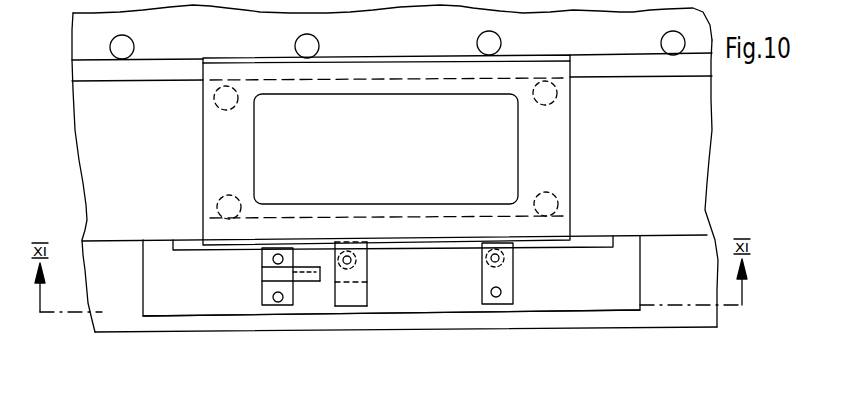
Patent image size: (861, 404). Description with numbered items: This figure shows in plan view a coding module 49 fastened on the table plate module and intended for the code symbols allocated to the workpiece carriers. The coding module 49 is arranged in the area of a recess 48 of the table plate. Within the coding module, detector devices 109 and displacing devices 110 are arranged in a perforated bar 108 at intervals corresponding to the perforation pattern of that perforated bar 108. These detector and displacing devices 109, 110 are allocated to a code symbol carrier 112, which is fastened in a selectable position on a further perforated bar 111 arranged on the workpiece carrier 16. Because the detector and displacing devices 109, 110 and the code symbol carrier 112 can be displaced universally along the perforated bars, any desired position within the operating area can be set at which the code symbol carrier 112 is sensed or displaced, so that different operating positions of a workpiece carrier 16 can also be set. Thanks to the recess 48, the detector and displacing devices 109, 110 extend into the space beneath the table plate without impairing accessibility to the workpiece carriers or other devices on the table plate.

The workpiece carrier 16 is at (561, 146).
The recess 48 is at (640, 272).
The coding module 49 is at (398, 303).
The perforated bar 108 is at (596, 246).
The detector device 109 is at (294, 308).
The displacing device 110 is at (520, 288).
The perforated bar 111 is at (223, 247).
The code symbol carrier 112 is at (375, 300).